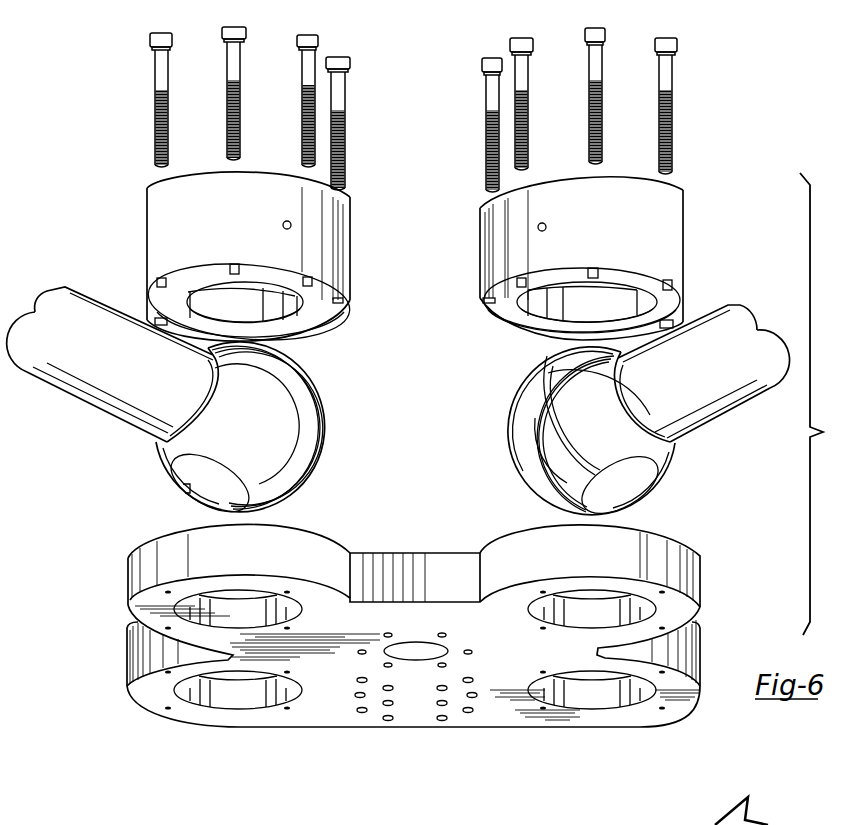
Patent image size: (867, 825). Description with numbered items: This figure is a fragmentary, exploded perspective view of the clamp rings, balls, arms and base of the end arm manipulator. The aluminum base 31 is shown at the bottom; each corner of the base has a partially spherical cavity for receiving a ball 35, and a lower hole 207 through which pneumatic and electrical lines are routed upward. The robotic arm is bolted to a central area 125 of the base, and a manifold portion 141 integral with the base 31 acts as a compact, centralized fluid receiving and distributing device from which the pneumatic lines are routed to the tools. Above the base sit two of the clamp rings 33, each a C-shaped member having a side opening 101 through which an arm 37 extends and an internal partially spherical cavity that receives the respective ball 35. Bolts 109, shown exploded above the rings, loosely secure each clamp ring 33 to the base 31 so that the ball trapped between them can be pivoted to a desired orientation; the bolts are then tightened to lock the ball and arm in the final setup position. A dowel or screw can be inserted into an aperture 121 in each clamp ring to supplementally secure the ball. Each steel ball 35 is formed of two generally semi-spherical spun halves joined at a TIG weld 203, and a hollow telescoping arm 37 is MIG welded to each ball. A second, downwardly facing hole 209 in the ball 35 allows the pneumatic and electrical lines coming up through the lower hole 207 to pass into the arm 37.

The base 31 is at (413, 646).
The clamp ring 33 is at (425, 260).
The ball 35 is at (361, 434).
The telescoping arm 37 is at (85, 383).
The side opening 101 is at (667, 302).
The bolts 109 is at (490, 62).
The aperture 121 is at (292, 226).
The central area 125 is at (416, 642).
The manifold portion 141 is at (413, 659).
The TIG weld 203 is at (547, 405).
The lower hole 207 is at (238, 700).
The second downwardly facing hole 209 is at (197, 504).